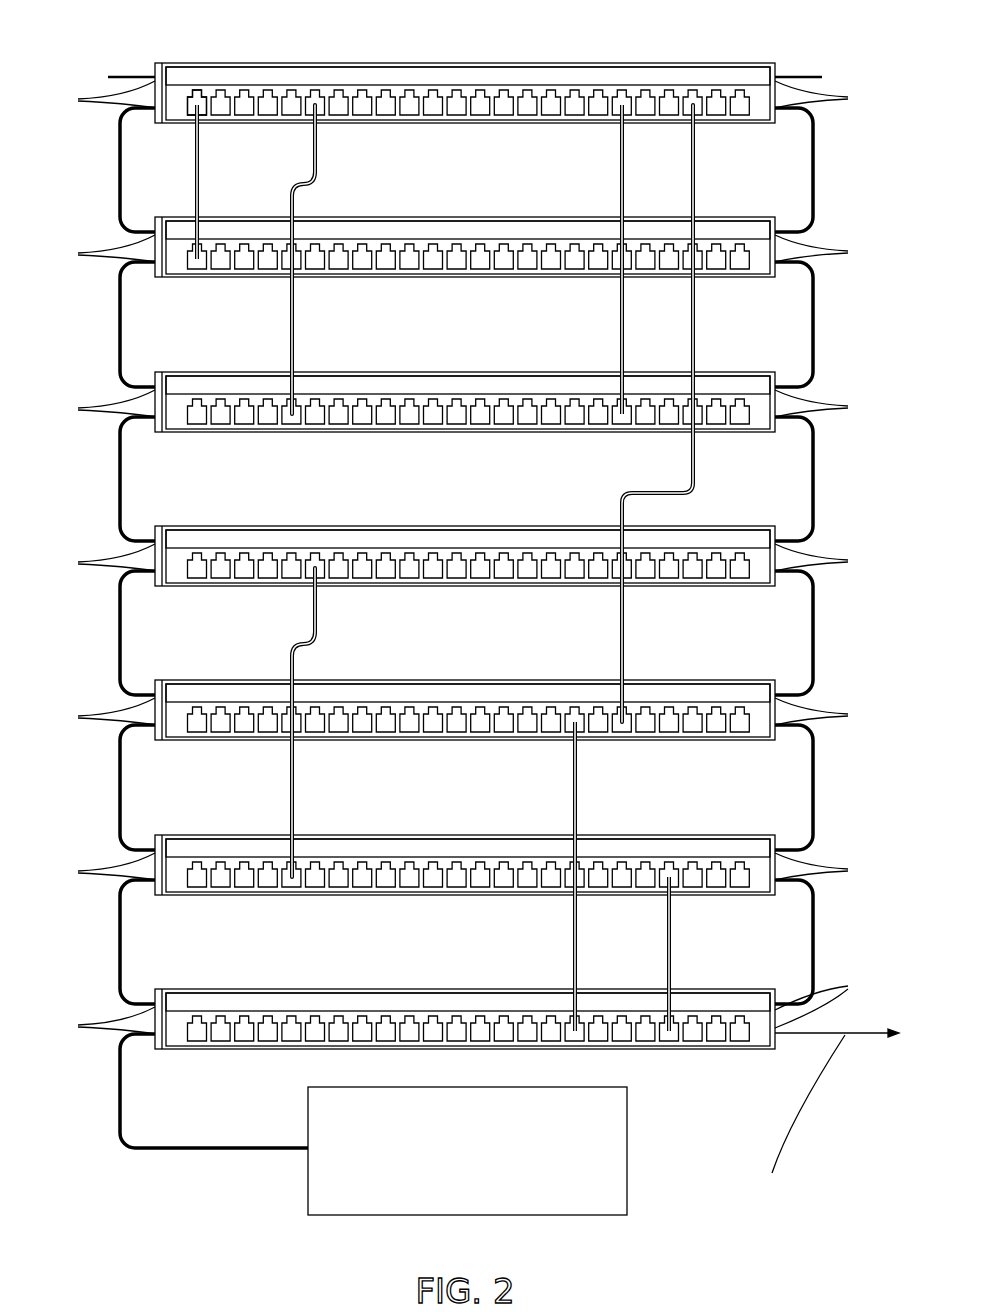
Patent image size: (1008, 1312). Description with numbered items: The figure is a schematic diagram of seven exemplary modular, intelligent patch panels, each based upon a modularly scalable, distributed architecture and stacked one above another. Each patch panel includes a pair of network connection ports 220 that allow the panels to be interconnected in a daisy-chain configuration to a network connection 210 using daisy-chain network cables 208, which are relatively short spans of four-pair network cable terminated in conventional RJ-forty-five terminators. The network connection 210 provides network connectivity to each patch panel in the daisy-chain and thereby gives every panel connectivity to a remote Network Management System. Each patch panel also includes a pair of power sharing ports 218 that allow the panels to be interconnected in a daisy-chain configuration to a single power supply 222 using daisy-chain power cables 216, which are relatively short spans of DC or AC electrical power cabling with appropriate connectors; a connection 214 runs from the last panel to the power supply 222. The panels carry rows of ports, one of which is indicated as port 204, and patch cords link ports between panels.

The port / jack 204 is at (197, 92).
The daisy-chain network cable 208 is at (815, 178).
The network connection 210 is at (858, 1037).
The power supply connection 214 is at (120, 1097).
The daisy-chain power cable 216 is at (120, 178).
The power sharing port 218 is at (101, 556).
The network connection port 220 is at (830, 552).
The power supply 222 is at (306, 1195).